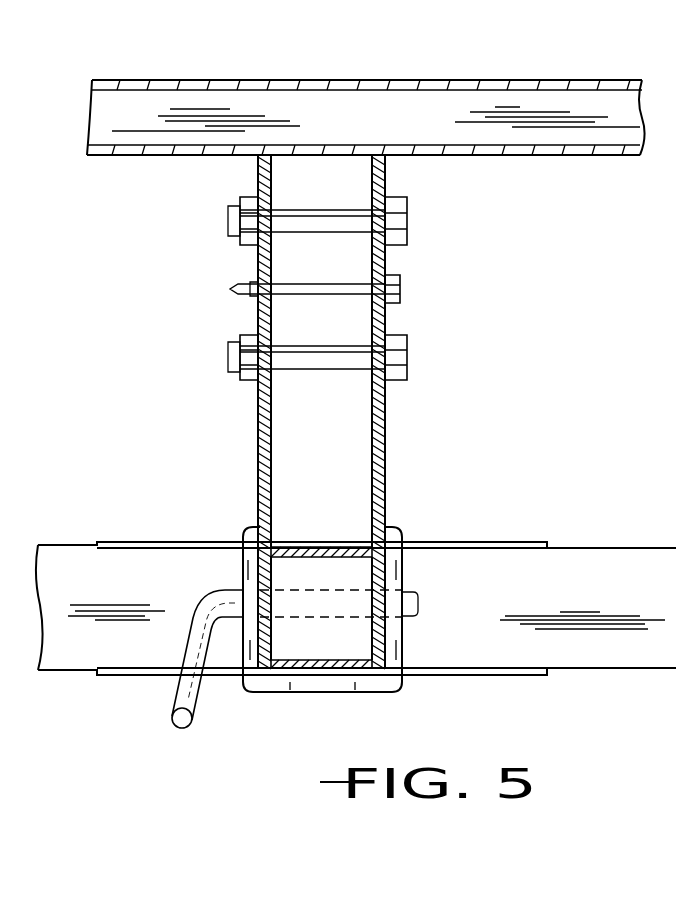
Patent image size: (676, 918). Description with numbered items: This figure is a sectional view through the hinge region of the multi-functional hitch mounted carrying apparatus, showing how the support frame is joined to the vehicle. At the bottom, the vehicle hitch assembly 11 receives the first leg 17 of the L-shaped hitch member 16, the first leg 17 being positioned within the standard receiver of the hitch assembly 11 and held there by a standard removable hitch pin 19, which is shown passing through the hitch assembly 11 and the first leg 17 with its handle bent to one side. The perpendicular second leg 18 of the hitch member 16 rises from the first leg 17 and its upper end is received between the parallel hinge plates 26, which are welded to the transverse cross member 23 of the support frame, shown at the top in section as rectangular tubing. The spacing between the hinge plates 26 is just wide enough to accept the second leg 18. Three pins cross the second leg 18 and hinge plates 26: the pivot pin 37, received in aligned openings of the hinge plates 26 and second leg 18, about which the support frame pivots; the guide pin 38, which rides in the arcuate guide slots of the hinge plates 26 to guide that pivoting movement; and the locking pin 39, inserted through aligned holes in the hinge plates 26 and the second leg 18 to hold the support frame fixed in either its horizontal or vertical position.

The hitch assembly 11 is at (608, 670).
The hitch member 16 is at (324, 412).
The first leg 17 is at (313, 685).
The second leg 18 is at (385, 462).
The hitch pin 19 is at (170, 703).
The transverse cross member 23 is at (548, 82).
The hinge plates 26 is at (385, 178).
The pivot pin 37 is at (313, 208).
The guide pin 38 is at (303, 377).
The locking pin 39 is at (345, 297).